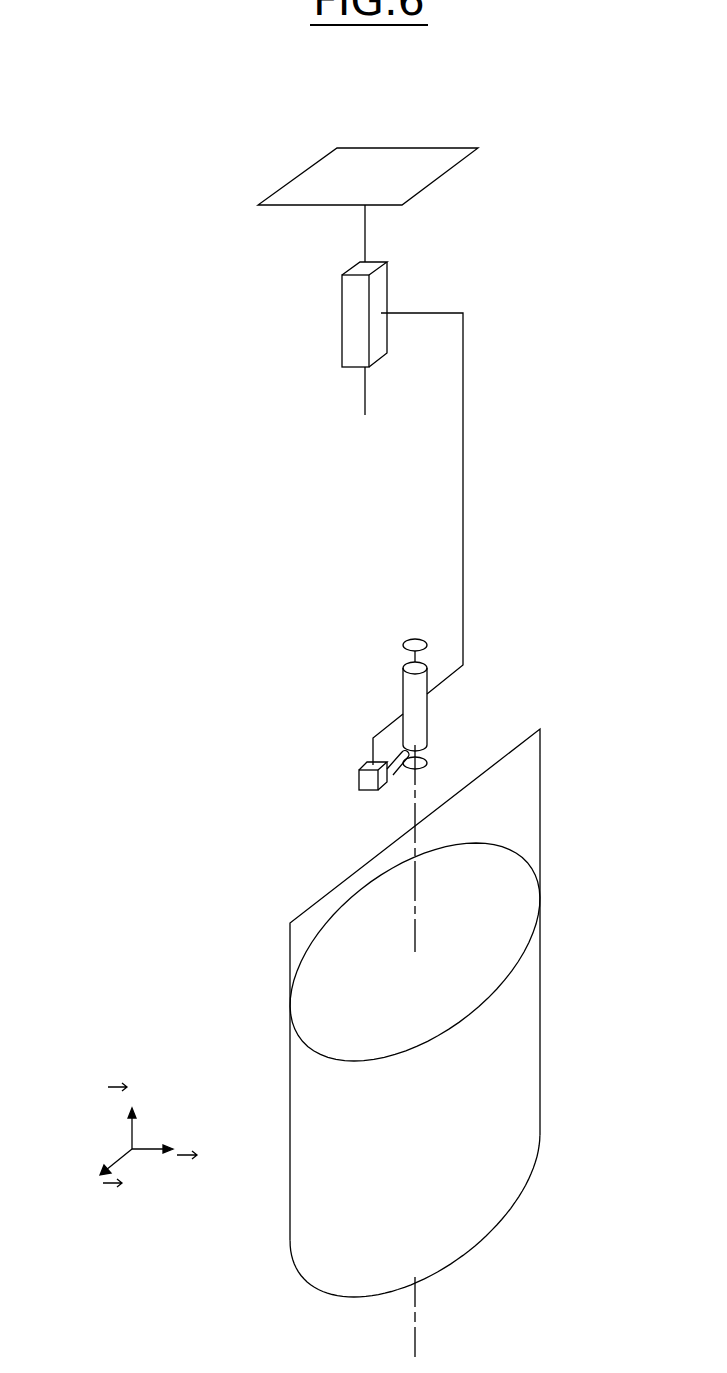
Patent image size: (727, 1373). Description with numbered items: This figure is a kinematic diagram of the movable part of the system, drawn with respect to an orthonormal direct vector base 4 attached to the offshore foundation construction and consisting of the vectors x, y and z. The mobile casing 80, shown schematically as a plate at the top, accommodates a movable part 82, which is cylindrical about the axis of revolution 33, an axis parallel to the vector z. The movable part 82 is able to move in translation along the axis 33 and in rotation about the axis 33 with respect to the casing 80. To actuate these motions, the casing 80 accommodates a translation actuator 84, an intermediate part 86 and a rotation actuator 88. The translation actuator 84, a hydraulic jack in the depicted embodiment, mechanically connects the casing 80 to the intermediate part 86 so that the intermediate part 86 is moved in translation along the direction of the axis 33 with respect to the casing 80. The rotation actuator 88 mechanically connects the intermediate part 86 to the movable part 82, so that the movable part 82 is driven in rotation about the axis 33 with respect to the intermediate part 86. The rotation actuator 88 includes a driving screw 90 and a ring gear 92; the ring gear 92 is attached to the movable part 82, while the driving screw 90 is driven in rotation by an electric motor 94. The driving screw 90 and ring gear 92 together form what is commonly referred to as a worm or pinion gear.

The orthonormal direct vector base 4 is at (86, 1192).
The axis of revolution 33 is at (416, 1335).
The mobile casing 80 is at (450, 163).
The movable part 82 is at (532, 1018).
The translation actuator 84 is at (342, 320).
The intermediate part 86 is at (464, 489).
The rotation actuator 88 is at (403, 675).
The driving screw 90 is at (397, 777).
The ring gear 92 is at (426, 762).
The electric motor 94 is at (359, 781).